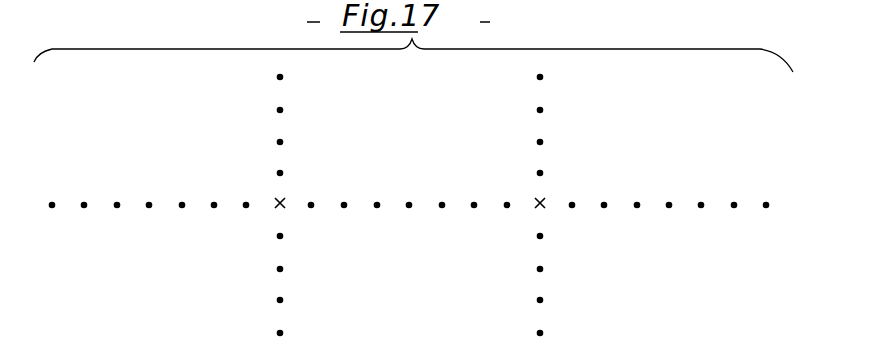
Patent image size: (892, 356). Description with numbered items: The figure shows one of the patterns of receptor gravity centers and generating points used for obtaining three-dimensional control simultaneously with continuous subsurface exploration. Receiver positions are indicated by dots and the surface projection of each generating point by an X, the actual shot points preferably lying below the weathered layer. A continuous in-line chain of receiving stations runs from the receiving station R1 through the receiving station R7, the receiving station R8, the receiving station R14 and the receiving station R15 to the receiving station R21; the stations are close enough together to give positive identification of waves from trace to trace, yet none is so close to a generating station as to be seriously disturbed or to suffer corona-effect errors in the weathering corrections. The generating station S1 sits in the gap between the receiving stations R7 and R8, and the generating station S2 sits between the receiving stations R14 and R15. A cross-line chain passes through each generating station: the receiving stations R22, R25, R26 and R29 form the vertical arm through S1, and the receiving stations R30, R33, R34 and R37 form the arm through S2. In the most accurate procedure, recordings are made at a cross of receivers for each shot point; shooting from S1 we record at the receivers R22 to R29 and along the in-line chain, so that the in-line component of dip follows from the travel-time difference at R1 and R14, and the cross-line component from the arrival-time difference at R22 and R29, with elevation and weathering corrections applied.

The receiving station R1 is at (53, 213).
The receiving station R7 is at (246, 213).
The receiving station R8 is at (313, 213).
The receiving station R14 is at (507, 213).
The receiving station R15 is at (576, 213).
The receiving station R21 is at (771, 214).
The generating station S1 is at (279, 214).
The generating station S2 is at (539, 214).
The receiving station R22 is at (292, 80).
The receiving station R25 is at (292, 176).
The receiving station R26 is at (292, 240).
The receiving station R29 is at (292, 336).
The receiving station R30 is at (552, 80).
The receiving station R33 is at (552, 176).
The receiving station R34 is at (552, 240).
The receiving station R37 is at (552, 336).